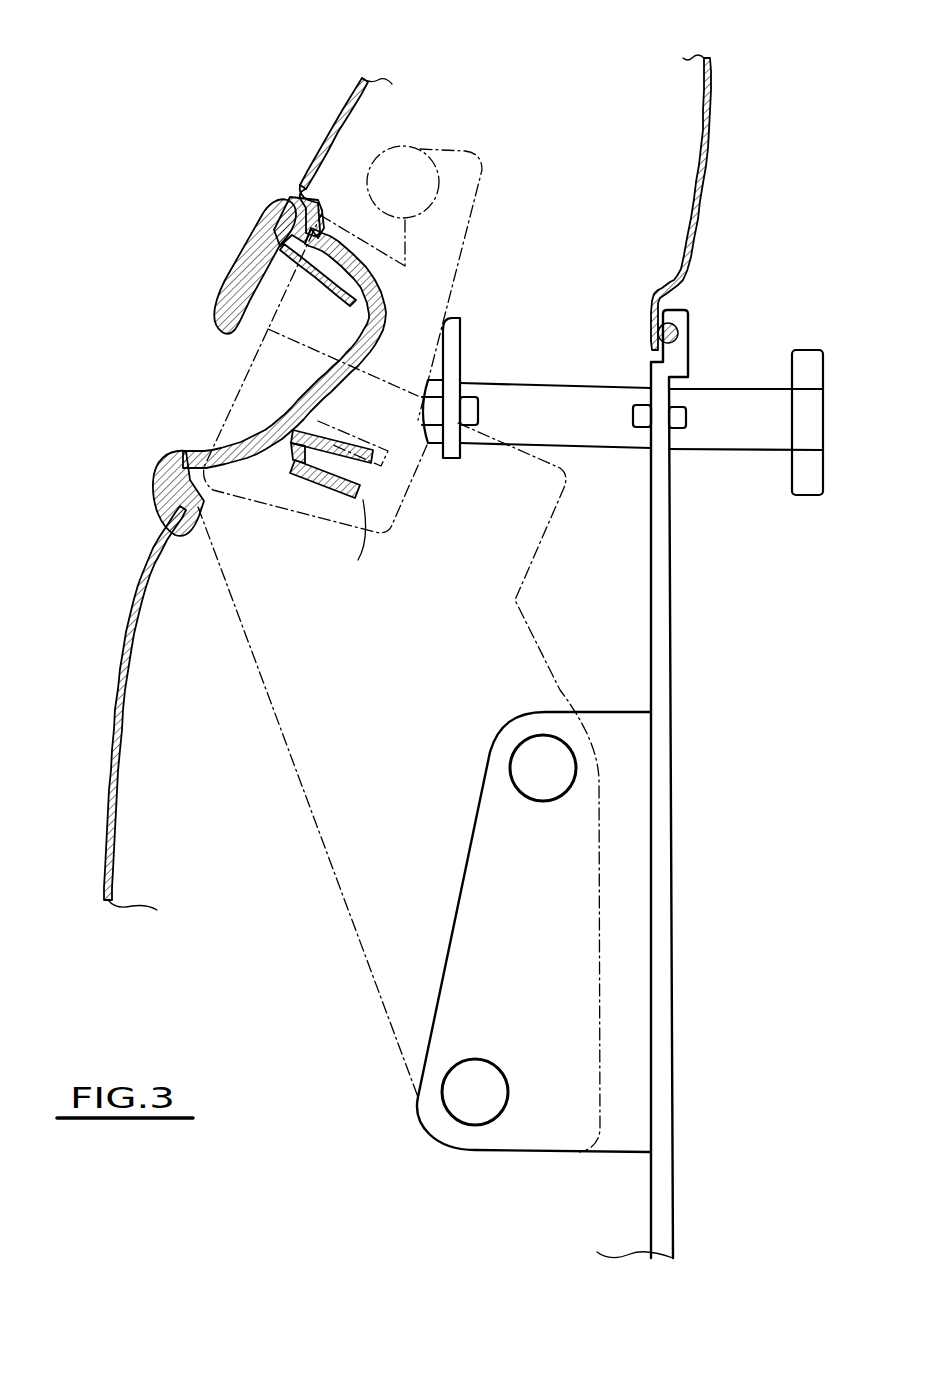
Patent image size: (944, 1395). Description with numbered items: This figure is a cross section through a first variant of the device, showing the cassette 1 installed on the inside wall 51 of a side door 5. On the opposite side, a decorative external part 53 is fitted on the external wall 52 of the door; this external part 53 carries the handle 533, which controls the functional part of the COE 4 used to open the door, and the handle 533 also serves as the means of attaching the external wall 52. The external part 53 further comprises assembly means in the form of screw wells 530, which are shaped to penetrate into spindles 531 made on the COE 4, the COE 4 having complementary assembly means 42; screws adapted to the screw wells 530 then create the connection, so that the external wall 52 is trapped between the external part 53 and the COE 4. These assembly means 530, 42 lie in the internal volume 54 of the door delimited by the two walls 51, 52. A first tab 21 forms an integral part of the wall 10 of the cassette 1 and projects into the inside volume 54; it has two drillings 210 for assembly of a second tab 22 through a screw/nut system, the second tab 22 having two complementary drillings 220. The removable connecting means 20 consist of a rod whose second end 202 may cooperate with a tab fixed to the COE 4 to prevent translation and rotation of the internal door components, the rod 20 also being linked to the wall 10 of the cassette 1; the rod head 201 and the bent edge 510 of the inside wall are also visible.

The cassette 1 is at (683, 914).
The wall of the cassette 10 is at (668, 604).
The removable connecting means 20 is at (722, 413).
The bolt head 201 is at (803, 363).
The second end of the rod 202 is at (493, 398).
The first tab 21 is at (640, 1070).
The drillings 210 is at (552, 770).
The second tab 22 is at (380, 940).
The complementary drillings 220 is at (510, 778).
The functional part of the COE 4 is at (463, 197).
The complementary means for assembly 42 is at (448, 345).
The side door 5 is at (626, 64).
The inside wall 51 is at (712, 97).
The bent edge of roof panel 510 is at (665, 292).
The external wall 52 is at (337, 125).
The external part 53 is at (275, 213).
The screw wells 530 is at (297, 468).
The spindles 531 is at (328, 500).
The handle 533 is at (240, 277).
The internal volume of the door 54 is at (227, 791).